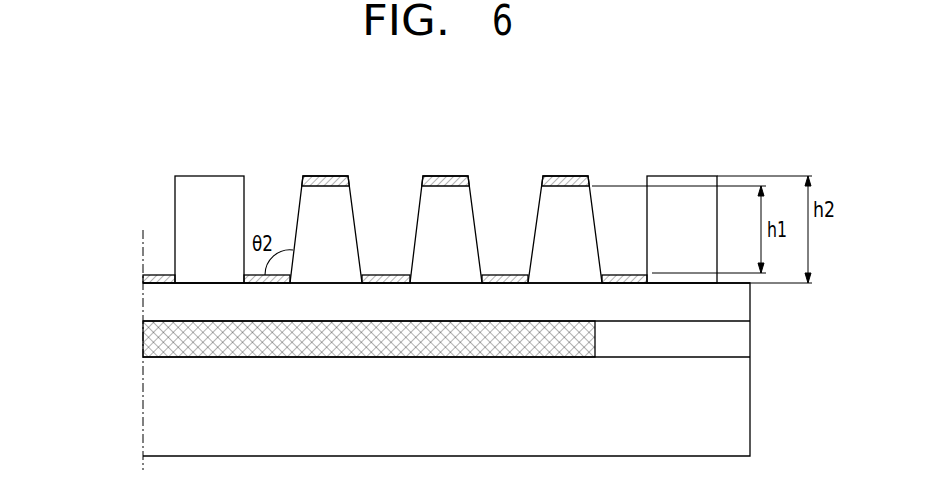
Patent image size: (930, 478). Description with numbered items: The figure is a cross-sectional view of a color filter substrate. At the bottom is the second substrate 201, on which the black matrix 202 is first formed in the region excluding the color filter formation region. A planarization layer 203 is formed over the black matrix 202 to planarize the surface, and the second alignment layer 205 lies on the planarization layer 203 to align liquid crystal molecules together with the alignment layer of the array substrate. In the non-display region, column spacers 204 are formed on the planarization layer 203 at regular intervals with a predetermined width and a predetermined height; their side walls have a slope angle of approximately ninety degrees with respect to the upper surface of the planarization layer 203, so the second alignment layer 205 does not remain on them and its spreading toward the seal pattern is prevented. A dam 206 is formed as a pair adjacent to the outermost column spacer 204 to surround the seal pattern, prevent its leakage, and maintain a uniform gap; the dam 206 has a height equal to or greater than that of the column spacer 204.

The second substrate 201 is at (150, 425).
The black matrix 202 is at (150, 342).
The planarization layer 203 is at (150, 306).
The column spacer 204 is at (327, 200).
The second alignment layer 205 is at (150, 279).
The dam 206 is at (185, 207).